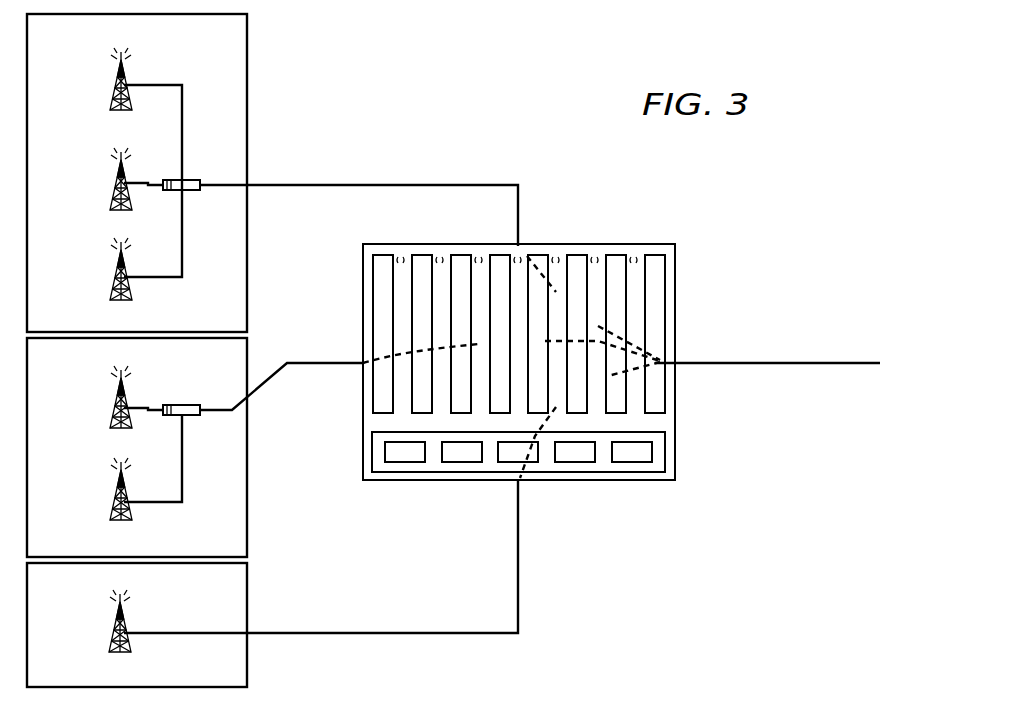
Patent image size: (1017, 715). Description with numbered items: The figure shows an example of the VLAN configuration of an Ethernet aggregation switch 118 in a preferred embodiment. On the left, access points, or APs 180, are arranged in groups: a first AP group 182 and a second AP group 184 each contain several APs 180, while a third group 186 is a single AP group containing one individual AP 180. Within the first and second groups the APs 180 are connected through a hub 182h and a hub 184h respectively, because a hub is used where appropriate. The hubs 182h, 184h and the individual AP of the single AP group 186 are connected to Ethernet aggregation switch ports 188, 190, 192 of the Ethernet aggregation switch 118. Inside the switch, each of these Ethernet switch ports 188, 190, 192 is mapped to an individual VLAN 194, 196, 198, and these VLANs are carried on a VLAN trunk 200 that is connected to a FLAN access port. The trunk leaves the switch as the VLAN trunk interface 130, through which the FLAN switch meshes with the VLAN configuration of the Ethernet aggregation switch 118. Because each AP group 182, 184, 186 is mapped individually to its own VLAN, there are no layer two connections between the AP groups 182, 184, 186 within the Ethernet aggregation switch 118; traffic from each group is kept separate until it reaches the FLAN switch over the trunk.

The Ethernet aggregation switch 118 is at (676, 462).
The VLAN trunk interface 130 is at (847, 363).
The AP 180 is at (112, 88).
The AP group 182 is at (248, 98).
The hub 182h is at (190, 178).
The AP group 184 is at (248, 507).
The hub 184h is at (193, 418).
The single AP group 186 is at (248, 610).
The Ethernet aggregation switch port 188 is at (518, 250).
The Ethernet aggregation switch port 190 is at (363, 363).
The Ethernet aggregation switch port 192 is at (518, 482).
The VLAN 194 is at (556, 293).
The VLAN 196 is at (428, 347).
The VLAN 198 is at (550, 408).
The VLAN trunk 200 is at (675, 363).